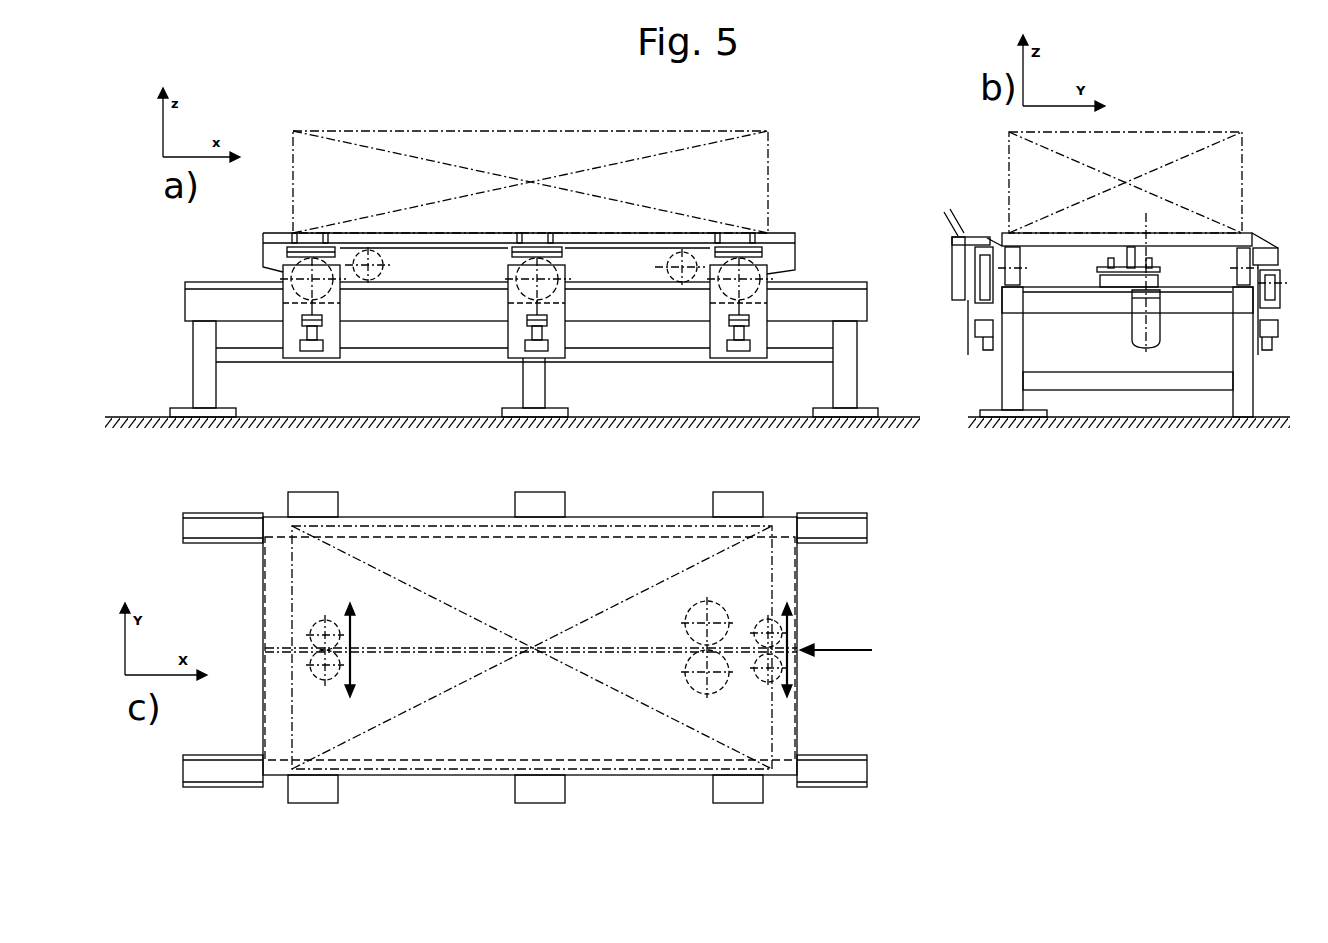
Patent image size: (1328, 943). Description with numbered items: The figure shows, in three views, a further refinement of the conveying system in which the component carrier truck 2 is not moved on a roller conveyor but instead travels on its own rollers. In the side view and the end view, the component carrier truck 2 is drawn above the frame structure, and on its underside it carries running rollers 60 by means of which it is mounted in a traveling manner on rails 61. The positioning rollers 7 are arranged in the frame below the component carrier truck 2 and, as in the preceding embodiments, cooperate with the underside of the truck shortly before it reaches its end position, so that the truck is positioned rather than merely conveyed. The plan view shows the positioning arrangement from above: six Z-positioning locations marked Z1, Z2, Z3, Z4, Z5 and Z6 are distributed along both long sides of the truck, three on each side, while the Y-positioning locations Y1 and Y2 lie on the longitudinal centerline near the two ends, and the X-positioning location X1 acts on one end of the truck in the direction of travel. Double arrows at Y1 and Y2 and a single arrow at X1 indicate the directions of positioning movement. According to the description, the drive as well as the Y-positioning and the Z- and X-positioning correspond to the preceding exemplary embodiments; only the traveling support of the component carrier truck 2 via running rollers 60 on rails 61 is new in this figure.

In FIG. 5a, the component carrier truck 2 is at (787, 233).
In FIG. 5a, the positioning rollers 7 is at (752, 296).
In FIG. 5a, the running rollers 60 is at (385, 262).
In FIG. 5a, the rails 61 is at (826, 283).
In FIG. 5c, the Z-axis actuator 1 Z1 is at (322, 507).
In FIG. 5c, the Z-axis actuator 2 Z2 is at (322, 793).
In FIG. 5c, the Z-axis actuator 3 Z3 is at (543, 507).
In FIG. 5c, the Z-axis actuator 4 Z4 is at (540, 795).
In FIG. 5c, the Z-axis actuator 5 Z5 is at (743, 507).
In FIG. 5c, the Z-axis actuator 6 Z6 is at (752, 795).
In FIG. 5c, the Y-axis actuator 1 Y1 is at (330, 643).
In FIG. 5c, the Y-axis actuator 2 Y2 is at (736, 643).
In FIG. 5c, the X-axis actuator X1 is at (836, 640).